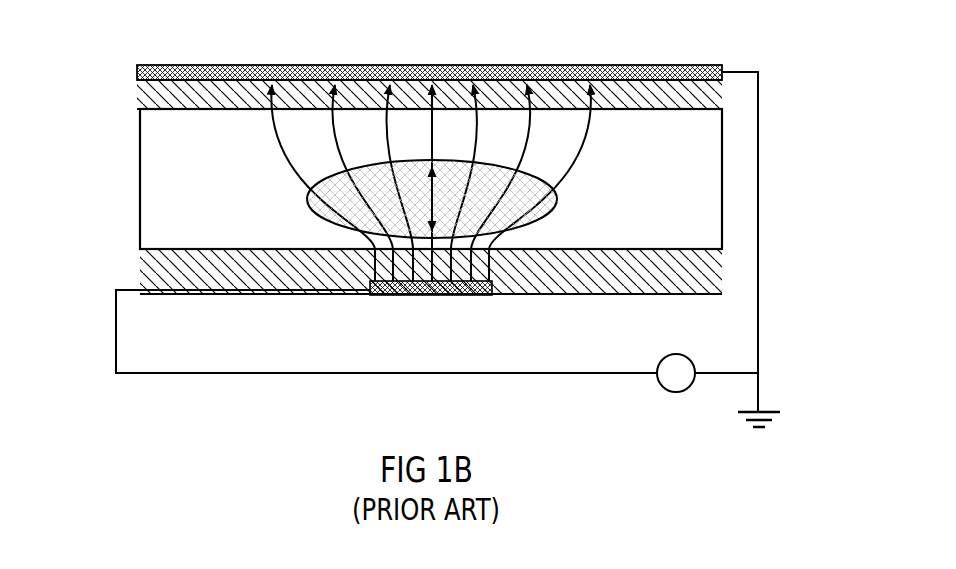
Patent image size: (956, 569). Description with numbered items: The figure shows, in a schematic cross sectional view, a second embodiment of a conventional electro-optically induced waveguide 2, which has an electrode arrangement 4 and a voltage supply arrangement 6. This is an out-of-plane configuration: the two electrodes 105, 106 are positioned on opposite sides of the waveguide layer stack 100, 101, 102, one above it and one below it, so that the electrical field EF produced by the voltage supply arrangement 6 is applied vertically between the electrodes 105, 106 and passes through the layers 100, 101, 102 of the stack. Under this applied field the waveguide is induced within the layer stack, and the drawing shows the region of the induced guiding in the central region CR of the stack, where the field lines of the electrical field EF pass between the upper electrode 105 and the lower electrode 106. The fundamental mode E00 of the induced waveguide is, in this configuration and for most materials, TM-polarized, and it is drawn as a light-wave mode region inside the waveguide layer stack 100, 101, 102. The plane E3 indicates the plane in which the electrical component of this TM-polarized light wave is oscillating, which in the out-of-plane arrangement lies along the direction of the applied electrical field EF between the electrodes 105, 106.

The electro-optically induced waveguide 2 is at (110, 56).
The electrode arrangement 4 is at (118, 275).
The voltage supply arrangement 6 is at (762, 365).
The waveguide layer stack layer 100 is at (140, 187).
The waveguide layer stack layer 101 is at (140, 100).
The waveguide layer stack layer 102 is at (140, 275).
The electrode 105 is at (722, 68).
The electrode 106 is at (433, 296).
The central region CR is at (428, 160).
The electrical field EF is at (305, 168).
The plane of oscillation of the electrical component E3 is at (445, 199).
The fundamental mode E00 is at (560, 195).